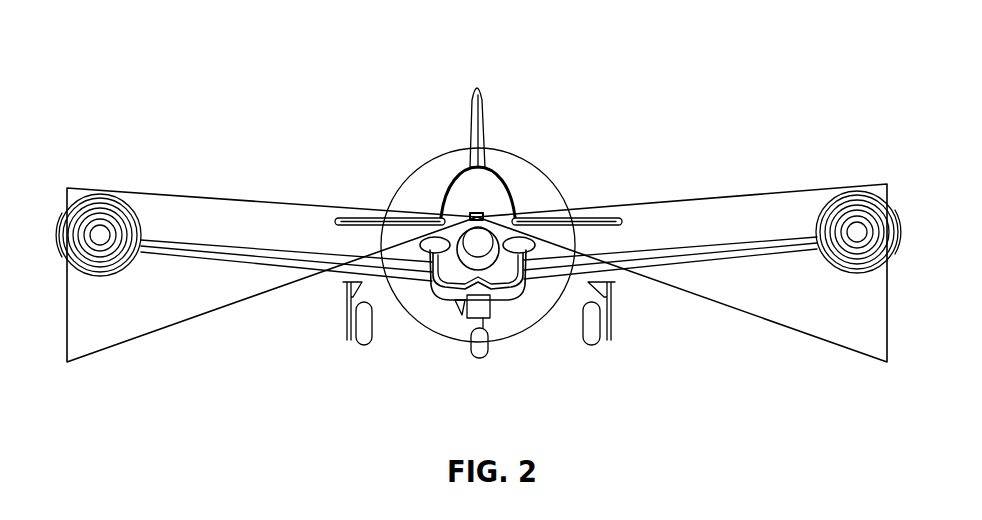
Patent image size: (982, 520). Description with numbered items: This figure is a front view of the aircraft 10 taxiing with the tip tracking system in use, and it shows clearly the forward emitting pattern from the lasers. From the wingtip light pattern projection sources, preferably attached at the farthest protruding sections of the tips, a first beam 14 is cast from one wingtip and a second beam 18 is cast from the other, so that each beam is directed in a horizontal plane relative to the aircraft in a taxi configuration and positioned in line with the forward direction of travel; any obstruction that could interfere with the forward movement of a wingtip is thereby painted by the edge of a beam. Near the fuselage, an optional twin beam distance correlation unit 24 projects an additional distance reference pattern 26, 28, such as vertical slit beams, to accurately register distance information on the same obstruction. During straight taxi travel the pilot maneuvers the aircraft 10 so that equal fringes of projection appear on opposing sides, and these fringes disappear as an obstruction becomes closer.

The aircraft 10 is at (534, 192).
The beam 14 is at (124, 268).
The beam 18 is at (828, 268).
The twin beam distance correlation unit 24 is at (483, 216).
The distance reference pattern 26 is at (204, 198).
The distance reference pattern 28 is at (763, 194).